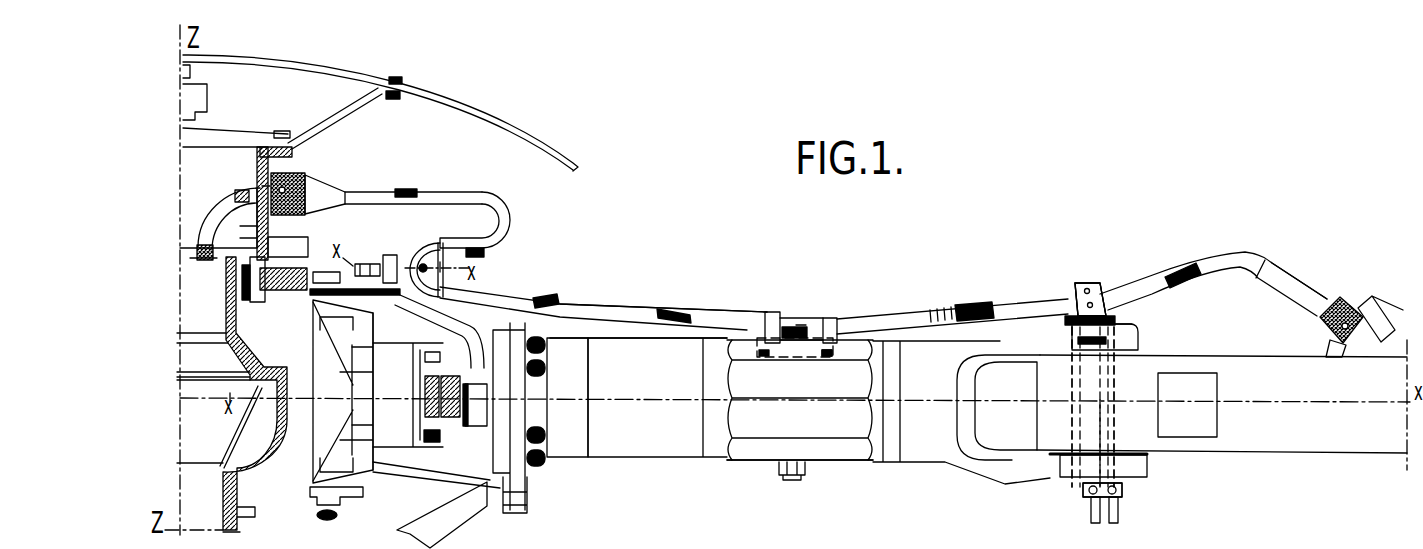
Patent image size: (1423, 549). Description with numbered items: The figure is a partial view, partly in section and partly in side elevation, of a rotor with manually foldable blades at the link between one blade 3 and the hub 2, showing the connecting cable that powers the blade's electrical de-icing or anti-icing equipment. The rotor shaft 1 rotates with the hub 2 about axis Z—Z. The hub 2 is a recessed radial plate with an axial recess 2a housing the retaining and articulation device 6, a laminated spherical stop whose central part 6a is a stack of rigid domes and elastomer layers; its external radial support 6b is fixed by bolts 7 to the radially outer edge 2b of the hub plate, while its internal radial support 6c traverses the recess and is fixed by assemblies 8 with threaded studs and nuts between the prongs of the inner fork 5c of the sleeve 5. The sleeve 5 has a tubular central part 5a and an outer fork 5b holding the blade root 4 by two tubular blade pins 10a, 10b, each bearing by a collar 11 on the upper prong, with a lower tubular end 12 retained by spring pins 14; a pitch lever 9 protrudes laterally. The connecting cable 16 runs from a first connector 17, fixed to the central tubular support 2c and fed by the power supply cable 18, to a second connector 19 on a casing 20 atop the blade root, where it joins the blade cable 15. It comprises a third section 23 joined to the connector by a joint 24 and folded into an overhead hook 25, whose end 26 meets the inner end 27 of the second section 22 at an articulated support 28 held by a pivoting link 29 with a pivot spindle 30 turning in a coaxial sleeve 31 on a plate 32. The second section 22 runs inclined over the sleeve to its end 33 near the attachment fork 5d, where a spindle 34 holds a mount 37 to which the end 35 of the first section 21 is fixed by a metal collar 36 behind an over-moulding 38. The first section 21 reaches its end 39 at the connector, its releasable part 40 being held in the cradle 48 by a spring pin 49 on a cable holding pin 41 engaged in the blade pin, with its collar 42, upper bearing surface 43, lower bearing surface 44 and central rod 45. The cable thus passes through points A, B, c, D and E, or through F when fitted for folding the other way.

The rotor shaft 1 is at (235, 533).
The hub 2 is at (251, 466).
The axial recess 2a is at (270, 413).
The radially outer edge of the hub plate 2b is at (452, 416).
The central tubular support 2c is at (257, 232).
The blade 3 is at (1328, 456).
The blade root 4 is at (1045, 425).
The sleeve 5 is at (678, 460).
The central part of the sleeve 5a is at (618, 440).
The outer fork 5b is at (1140, 337).
The inner fork 5c is at (332, 308).
The attachment fork 5d is at (800, 504).
The retaining and articulation device 6 is at (390, 462).
The central part of the stop 6a is at (387, 350).
The external radial support 6b is at (432, 368).
The internal radial support 6c is at (357, 393).
The bolts 7 is at (430, 414).
The assemblies with axial threaded studs and nuts 8 is at (326, 271).
The pitch lever 9 is at (527, 470).
The blade pin 10a is at (1122, 495).
The blade pin 10b is at (1093, 407).
The collar 11 is at (1103, 318).
The lower tubular end 12 is at (1072, 515).
The spring pins 14 is at (1094, 512).
The cable 15 is at (1378, 326).
The electrical connecting cable 16 is at (693, 295).
The first connector 17 is at (298, 183).
The electrical power supply cable 18 is at (215, 213).
The second connector 19 is at (1338, 300).
The casing 20 is at (1340, 346).
The first section of cable 21 is at (1213, 254).
The second section of cable 22 is at (638, 306).
The third section of cable 23 is at (430, 190).
The joint of varying cross section 24 is at (320, 187).
The overhead hook 25 is at (517, 218).
The end of the third section 26 is at (452, 247).
The radially inner end of the second section 27 is at (475, 291).
The articulated support 28 is at (437, 241).
The pivoting link 29 is at (386, 253).
The pivot spindle 30 is at (362, 263).
The coaxial sleeve 31 is at (423, 262).
The plate 32 is at (307, 290).
The end of the second section 33 is at (748, 318).
The spindle 34 is at (806, 470).
The end of the first section 35 is at (828, 318).
The metal collar 36 is at (805, 320).
The mount 37 is at (830, 350).
The over-moulding 38 is at (770, 347).
The end of the first section 39 is at (1300, 292).
The releasable part 40 is at (1123, 288).
The cable holding pin 41 is at (1108, 412).
The radially external collar 42 is at (1040, 312).
The upper cylindrical bearing surface 43 is at (1070, 318).
The lower cylindrical bearing surface 44 is at (1120, 492).
The central rod 45 is at (1088, 432).
The cradle 48 is at (1104, 300).
The spring pin 49 is at (1086, 289).
The point A is at (268, 188).
The point B is at (443, 266).
The point C c is at (805, 327).
The point D is at (1088, 305).
The point F is at (1090, 299).
The point E is at (1350, 306).